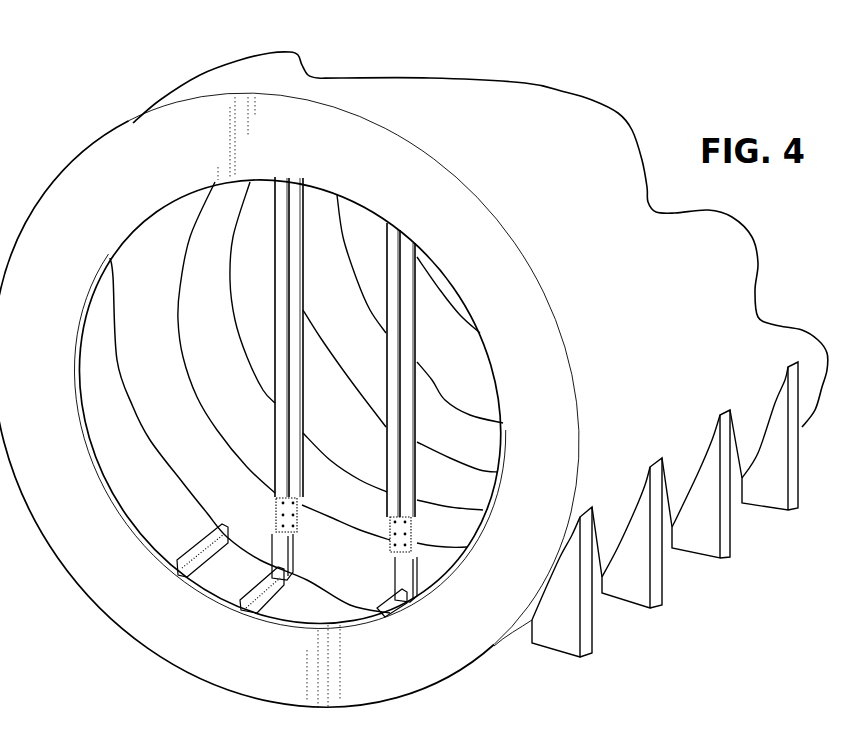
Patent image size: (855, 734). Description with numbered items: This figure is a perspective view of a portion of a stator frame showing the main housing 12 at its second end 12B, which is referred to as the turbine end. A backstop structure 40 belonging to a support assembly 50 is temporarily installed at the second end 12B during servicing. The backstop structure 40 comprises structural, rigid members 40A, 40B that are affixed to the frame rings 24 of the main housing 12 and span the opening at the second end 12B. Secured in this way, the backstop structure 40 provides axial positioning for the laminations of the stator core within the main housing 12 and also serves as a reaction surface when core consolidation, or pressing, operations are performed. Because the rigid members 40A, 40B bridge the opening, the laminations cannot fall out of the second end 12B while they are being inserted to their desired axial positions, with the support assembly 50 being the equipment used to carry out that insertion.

The main housing 12 is at (503, 652).
The second end 12B is at (112, 553).
The frame rings 24 is at (147, 260).
The backstop structure 40 is at (345, 312).
The structural rigid member 40A is at (283, 438).
The structural rigid member 40B is at (408, 420).
The support assembly 50 is at (418, 254).